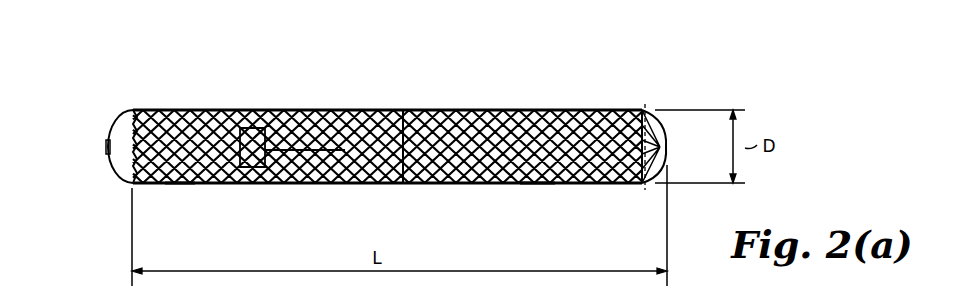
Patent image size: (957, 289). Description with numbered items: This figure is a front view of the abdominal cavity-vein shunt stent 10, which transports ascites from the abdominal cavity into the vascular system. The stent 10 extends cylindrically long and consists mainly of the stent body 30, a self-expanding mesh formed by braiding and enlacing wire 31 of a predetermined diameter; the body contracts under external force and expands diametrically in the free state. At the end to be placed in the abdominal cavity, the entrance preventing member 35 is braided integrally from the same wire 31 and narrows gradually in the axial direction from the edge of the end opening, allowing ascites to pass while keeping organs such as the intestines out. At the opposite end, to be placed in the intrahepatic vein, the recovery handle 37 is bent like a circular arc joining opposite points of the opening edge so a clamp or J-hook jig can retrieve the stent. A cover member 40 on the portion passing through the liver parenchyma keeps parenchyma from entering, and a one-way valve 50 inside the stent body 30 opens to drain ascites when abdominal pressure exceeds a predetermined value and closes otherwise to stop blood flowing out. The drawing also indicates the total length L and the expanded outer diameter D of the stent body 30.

The abdominal cavity-vein shunt stent 10 is at (520, 93).
The stent body 30 is at (212, 188).
The wire 31 is at (178, 185).
The entrance preventing member 35 is at (667, 142).
The recovery handle 37 is at (110, 167).
The cover member 40 is at (537, 185).
The one-way valve 50 is at (265, 185).